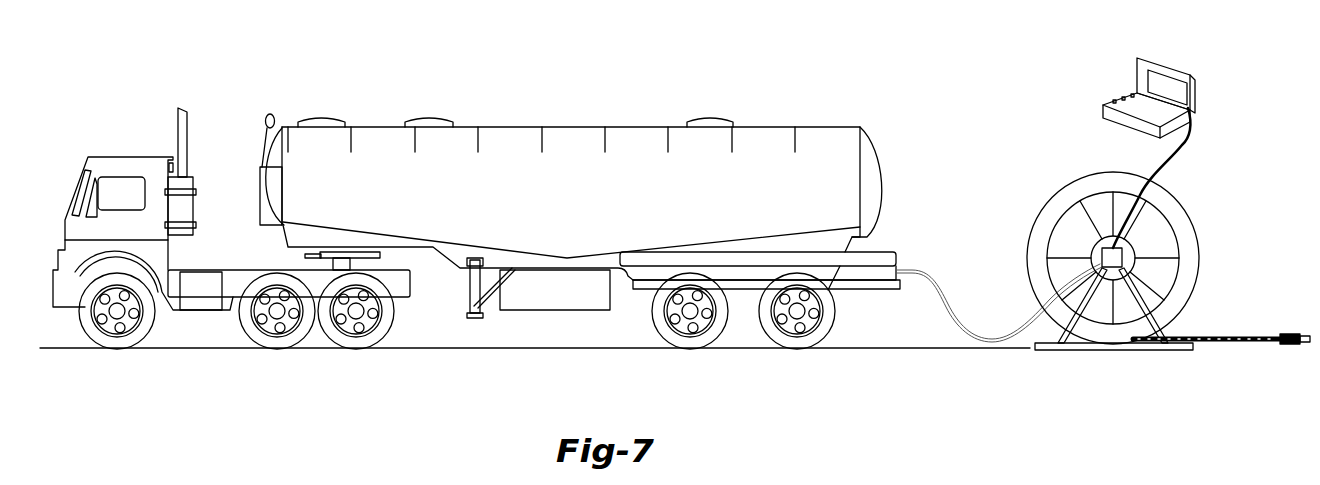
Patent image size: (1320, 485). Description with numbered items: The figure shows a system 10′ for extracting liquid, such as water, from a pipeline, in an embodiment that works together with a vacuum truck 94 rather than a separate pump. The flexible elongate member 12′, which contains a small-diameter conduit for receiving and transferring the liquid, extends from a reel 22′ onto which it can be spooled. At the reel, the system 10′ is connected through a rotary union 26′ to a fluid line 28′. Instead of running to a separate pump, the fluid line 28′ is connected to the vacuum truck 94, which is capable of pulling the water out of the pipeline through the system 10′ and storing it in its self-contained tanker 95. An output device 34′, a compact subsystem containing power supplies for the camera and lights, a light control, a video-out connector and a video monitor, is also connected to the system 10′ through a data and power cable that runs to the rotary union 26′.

The system 10′ is at (1231, 174).
The flexible elongate member 12′ is at (1242, 346).
The reel 22′ is at (1056, 194).
The rotary union 26′ is at (1141, 249).
The fluid line 28′ is at (990, 333).
The output device 34′ is at (1201, 92).
The vacuum truck 94 is at (580, 104).
The tanker 95 is at (818, 127).